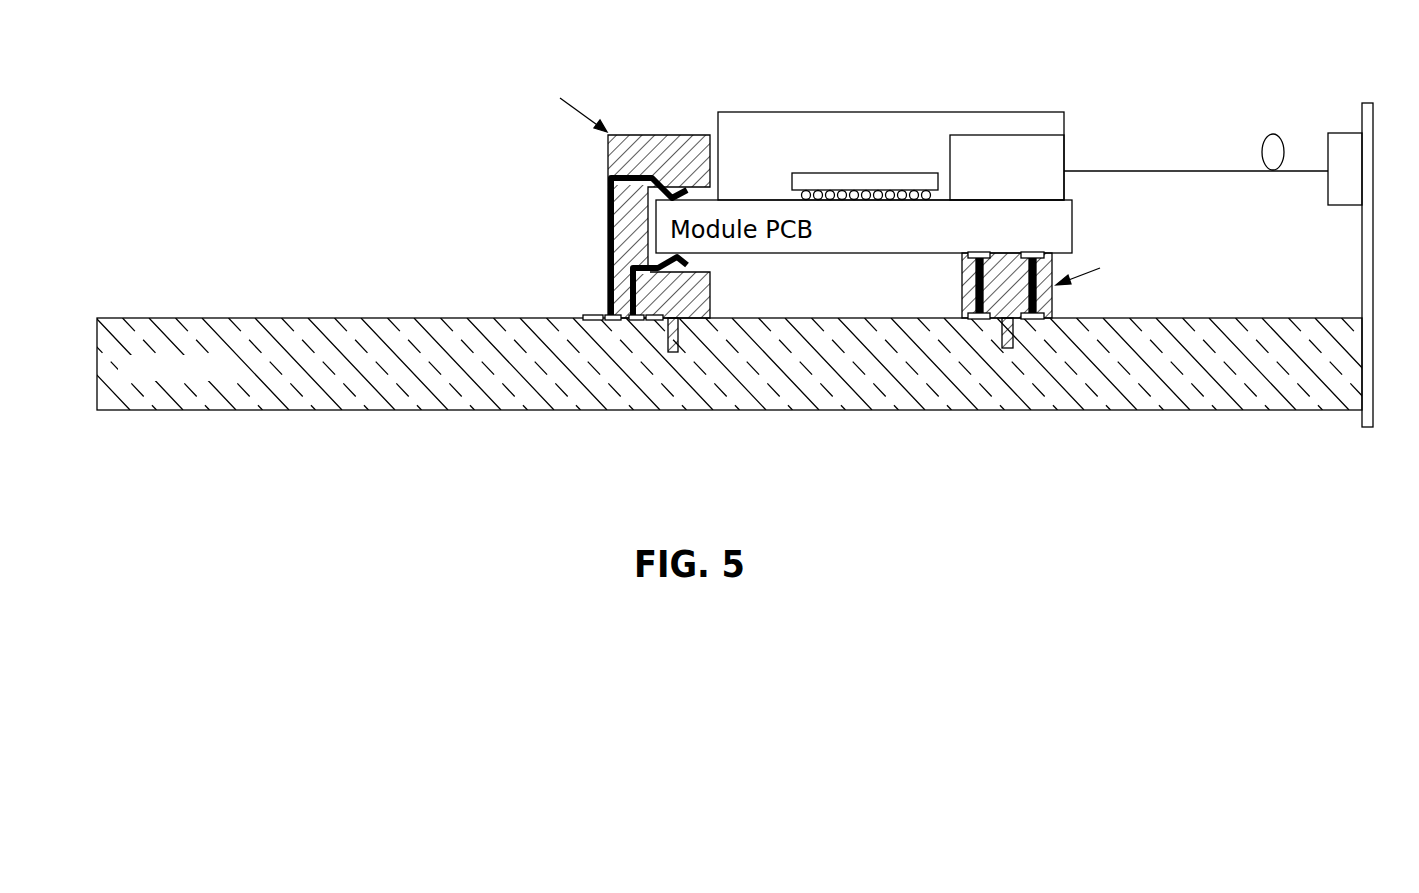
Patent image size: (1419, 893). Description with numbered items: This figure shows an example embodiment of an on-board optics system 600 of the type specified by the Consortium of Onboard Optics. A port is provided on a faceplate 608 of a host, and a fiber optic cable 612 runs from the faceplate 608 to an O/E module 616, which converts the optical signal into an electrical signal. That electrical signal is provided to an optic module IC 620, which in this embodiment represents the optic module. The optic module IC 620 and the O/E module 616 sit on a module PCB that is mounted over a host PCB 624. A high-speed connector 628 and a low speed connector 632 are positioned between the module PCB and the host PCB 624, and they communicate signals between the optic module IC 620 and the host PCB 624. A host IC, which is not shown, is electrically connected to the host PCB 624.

The connector 600 is at (1347, 133).
The faceplate 608 is at (1362, 252).
The fiber optic cable 612 is at (1157, 171).
The O/E module 616 is at (995, 135).
The optic module IC 620 is at (845, 173).
The host PCB 624 is at (277, 410).
The high-speed connector 628 is at (608, 222).
The low speed connector 632 is at (972, 290).